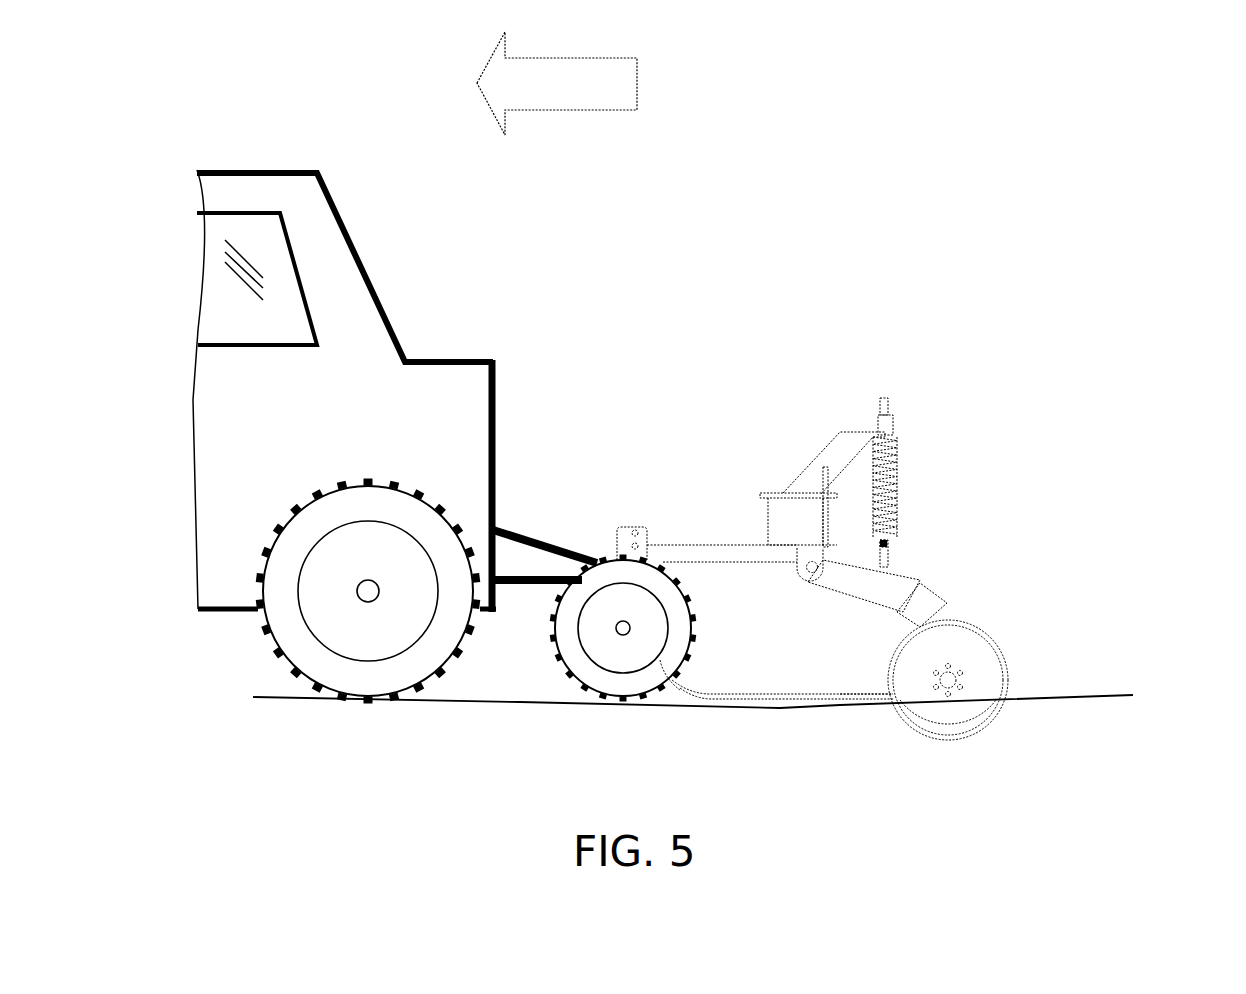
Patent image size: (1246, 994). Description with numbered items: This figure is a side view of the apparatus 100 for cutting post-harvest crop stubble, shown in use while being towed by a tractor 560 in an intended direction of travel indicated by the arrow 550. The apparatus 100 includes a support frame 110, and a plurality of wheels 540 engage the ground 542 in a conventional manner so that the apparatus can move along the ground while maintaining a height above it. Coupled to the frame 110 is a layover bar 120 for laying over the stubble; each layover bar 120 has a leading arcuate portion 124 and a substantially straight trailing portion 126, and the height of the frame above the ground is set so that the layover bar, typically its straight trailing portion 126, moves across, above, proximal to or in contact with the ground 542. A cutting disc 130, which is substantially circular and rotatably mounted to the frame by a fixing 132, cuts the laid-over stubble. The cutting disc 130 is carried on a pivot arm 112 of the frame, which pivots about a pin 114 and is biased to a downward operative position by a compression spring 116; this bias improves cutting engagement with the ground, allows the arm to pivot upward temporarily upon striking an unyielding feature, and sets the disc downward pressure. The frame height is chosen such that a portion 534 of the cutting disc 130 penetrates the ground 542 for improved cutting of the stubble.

The apparatus 100 is at (688, 289).
The support frame 110 is at (835, 568).
The pivot arm 112 is at (897, 580).
The pin 114 is at (810, 573).
The compression spring 116 is at (885, 442).
The layover bar 120 is at (817, 698).
The leading arcuate portion 124 is at (680, 693).
The trailing portion 126 is at (847, 697).
The cutting disc 130 is at (985, 658).
The fixing 132 is at (953, 675).
The portion of the cutting disc 534 is at (943, 713).
The wheel 540 is at (635, 572).
The ground 542 is at (1097, 695).
The arrow 550 is at (582, 82).
The tractor 560 is at (237, 143).